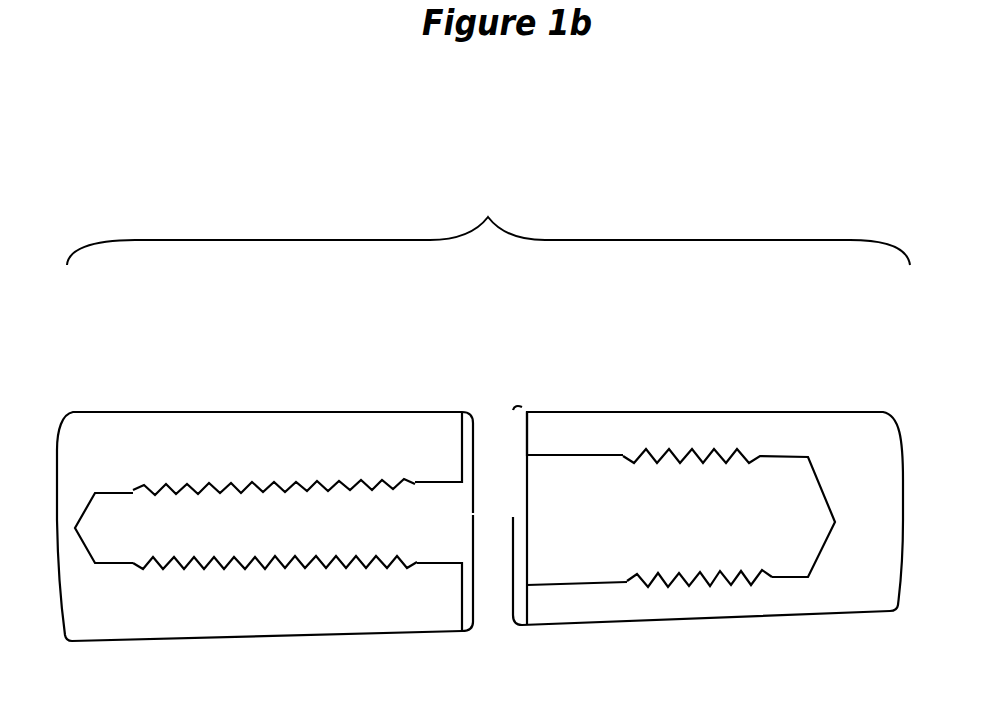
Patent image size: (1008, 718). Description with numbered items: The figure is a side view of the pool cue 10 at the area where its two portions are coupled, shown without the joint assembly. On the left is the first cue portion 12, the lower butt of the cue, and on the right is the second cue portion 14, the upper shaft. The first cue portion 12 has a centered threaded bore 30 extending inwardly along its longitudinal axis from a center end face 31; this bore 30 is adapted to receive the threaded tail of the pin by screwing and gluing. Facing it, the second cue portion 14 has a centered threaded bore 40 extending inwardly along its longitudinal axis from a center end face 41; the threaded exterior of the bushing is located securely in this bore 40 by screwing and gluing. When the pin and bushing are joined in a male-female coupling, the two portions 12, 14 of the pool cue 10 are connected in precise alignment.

The pool cue 10 is at (488, 229).
The first cue portion 12 is at (87, 440).
The second cue portion 14 is at (875, 440).
The threaded bore 30 is at (260, 494).
The center end face 31 is at (473, 513).
The threaded bore 40 is at (728, 458).
The center end face 41 is at (513, 410).